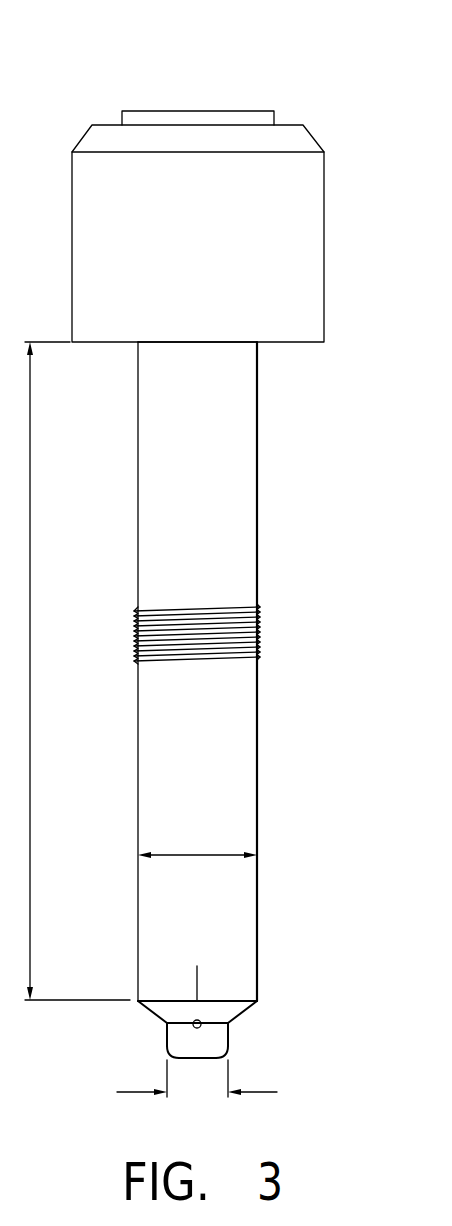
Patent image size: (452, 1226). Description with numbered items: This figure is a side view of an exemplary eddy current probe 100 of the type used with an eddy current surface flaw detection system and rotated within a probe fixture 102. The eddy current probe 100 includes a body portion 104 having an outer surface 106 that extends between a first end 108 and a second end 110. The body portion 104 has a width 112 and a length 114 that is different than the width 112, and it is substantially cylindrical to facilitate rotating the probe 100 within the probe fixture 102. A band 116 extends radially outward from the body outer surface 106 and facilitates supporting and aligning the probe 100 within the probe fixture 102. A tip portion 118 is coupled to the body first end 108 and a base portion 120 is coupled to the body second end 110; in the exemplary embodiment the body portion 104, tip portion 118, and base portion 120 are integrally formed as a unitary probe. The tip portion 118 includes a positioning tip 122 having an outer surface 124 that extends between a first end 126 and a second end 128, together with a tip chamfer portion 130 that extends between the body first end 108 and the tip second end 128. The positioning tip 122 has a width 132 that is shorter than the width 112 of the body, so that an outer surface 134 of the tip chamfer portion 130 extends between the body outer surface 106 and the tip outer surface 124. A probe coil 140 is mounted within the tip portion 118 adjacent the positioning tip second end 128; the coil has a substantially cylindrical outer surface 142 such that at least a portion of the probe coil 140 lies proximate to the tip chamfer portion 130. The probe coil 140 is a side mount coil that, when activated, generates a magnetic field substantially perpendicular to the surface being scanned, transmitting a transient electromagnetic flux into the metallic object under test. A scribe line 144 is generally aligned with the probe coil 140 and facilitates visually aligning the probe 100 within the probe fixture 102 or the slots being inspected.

The eddy current probe 100 is at (124, 54).
The probe fixture 102 is at (443, 235).
The body portion 104 is at (158, 543).
The outer surface 106 is at (138, 473).
The first end 108 is at (231, 1013).
The second end 110 is at (157, 343).
The width 112 is at (186, 855).
The length 114 is at (31, 718).
The band 116 is at (171, 614).
The tip portion 118 is at (128, 1068).
The base portion 120 is at (354, 143).
The positioning tip 122 is at (203, 1042).
The outer surface 124 is at (233, 1042).
The first end 126 is at (197, 1060).
The second end 128 is at (177, 1027).
The tip chamfer portion 130 is at (232, 1023).
The width 132 is at (130, 1093).
The outer surface 134 is at (150, 1012).
The probe coil 140 is at (201, 1020).
The outer surface 142 is at (193, 1020).
The scribe line 144 is at (199, 979).